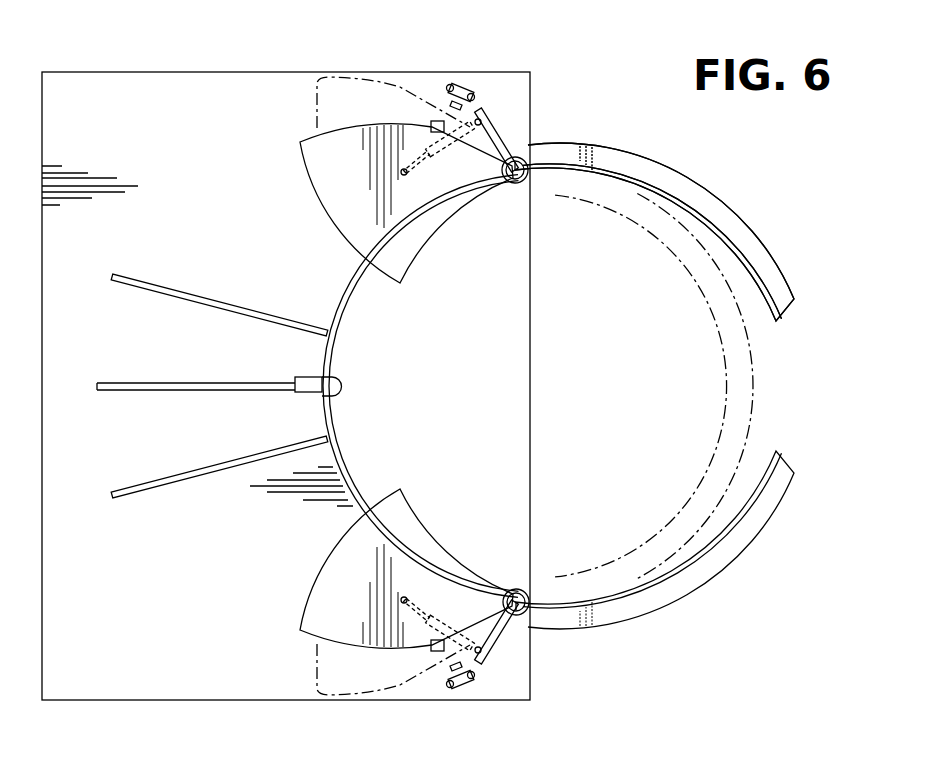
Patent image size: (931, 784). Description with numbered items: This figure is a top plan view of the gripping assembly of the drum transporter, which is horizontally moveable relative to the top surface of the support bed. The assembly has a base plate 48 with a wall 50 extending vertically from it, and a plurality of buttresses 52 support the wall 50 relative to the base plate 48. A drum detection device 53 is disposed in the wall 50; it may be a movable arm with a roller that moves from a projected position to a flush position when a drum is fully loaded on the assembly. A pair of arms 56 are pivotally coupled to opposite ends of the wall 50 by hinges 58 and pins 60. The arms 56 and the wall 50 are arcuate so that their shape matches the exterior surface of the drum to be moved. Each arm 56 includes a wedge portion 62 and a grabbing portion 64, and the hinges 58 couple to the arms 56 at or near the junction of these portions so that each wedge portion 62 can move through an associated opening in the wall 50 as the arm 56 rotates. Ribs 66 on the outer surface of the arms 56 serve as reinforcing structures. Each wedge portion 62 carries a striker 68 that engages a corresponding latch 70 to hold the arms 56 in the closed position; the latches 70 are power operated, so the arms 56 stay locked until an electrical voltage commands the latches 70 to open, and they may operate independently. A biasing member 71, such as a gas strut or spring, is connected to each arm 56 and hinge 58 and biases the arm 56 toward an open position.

The base plate 48 is at (116, 676).
The wall 50 is at (337, 320).
The buttresses 52 is at (200, 385).
The drum detection device 53 is at (343, 395).
The arms 56 is at (685, 205).
The hinges 58 is at (490, 662).
The pins 60 is at (523, 158).
The wedge portion 62 is at (420, 235).
The grabbing portion 64 is at (730, 245).
The ribs 66 is at (778, 283).
The striker 68 is at (432, 121).
The latch 70 is at (462, 88).
The biasing member 71 is at (496, 134).